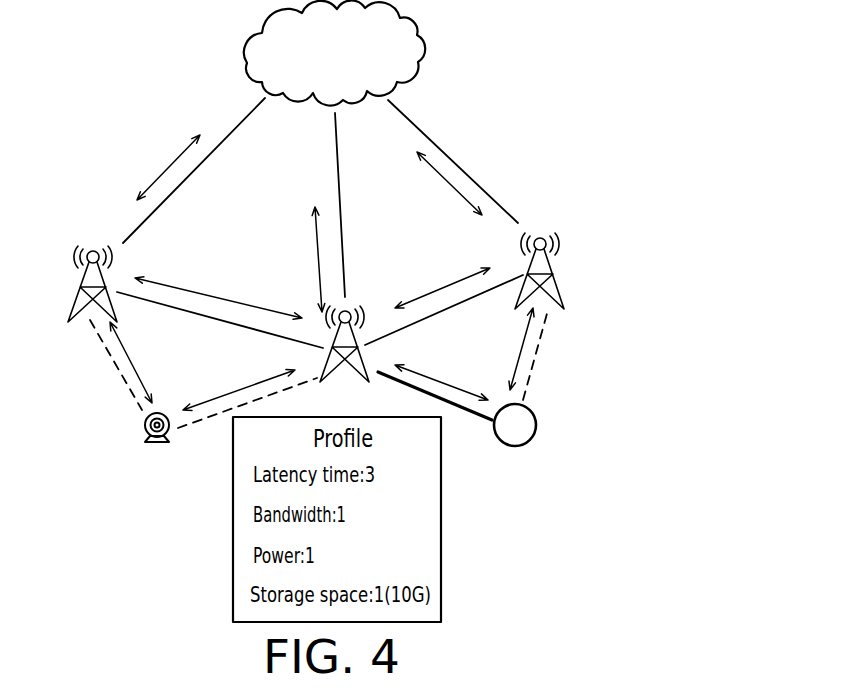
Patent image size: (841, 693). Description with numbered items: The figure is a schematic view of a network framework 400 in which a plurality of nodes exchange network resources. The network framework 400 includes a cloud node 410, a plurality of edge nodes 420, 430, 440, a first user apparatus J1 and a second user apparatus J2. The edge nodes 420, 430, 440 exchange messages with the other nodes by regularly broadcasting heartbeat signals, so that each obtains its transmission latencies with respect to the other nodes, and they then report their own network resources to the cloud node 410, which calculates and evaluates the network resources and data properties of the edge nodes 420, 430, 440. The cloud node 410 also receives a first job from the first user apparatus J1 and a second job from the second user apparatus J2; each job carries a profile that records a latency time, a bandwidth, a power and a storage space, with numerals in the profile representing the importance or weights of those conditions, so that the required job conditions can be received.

The cloud node 410 is at (420, 50).
The edge node 420 is at (93, 240).
The edge node 430 is at (360, 300).
The edge node 440 is at (565, 242).
The first user apparatus J1 is at (533, 442).
The second user apparatus J2 is at (145, 437).
The network framework 400 is at (667, 561).